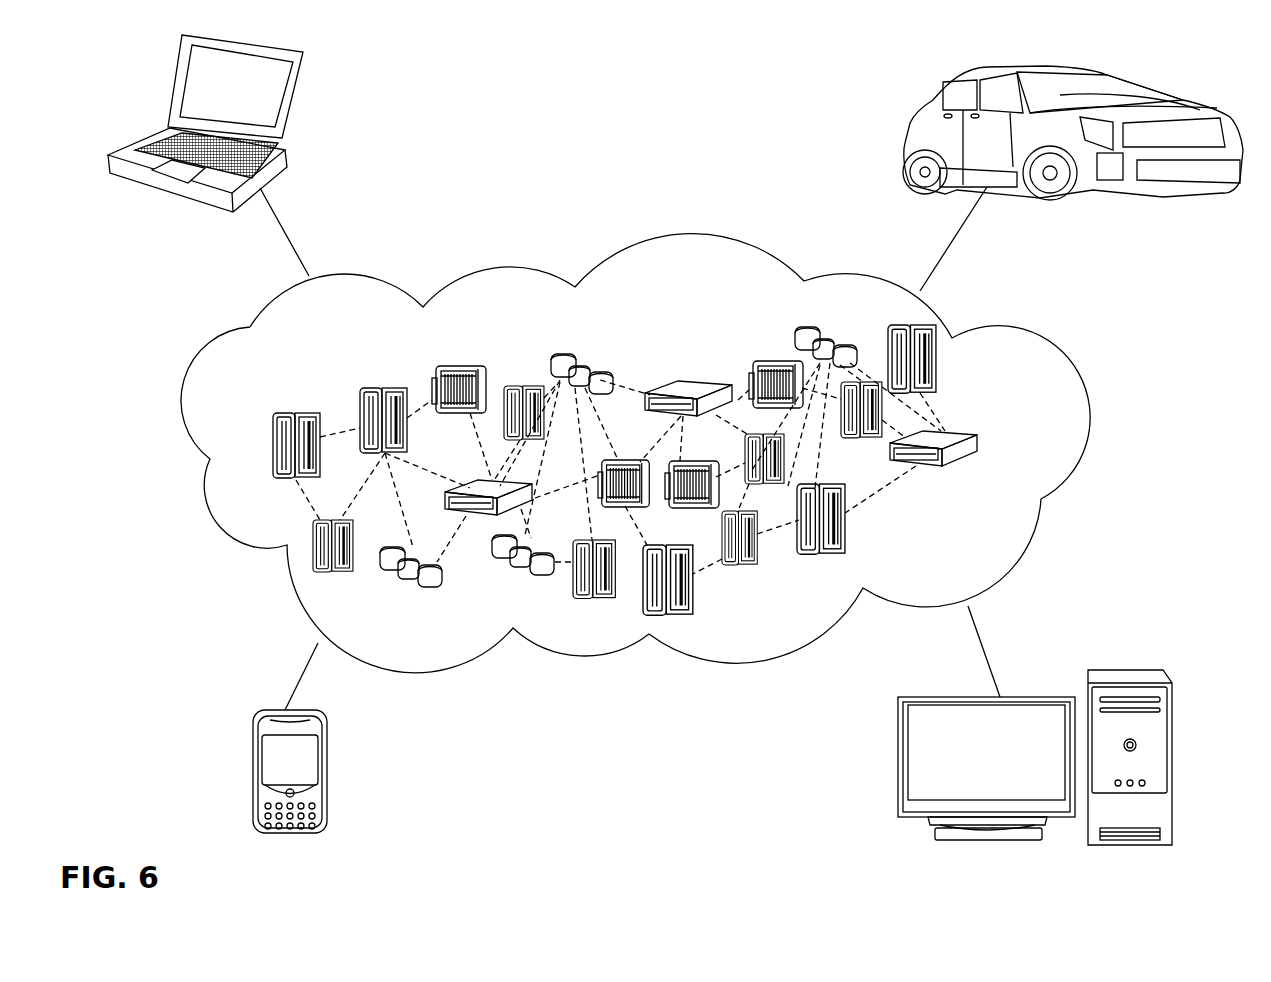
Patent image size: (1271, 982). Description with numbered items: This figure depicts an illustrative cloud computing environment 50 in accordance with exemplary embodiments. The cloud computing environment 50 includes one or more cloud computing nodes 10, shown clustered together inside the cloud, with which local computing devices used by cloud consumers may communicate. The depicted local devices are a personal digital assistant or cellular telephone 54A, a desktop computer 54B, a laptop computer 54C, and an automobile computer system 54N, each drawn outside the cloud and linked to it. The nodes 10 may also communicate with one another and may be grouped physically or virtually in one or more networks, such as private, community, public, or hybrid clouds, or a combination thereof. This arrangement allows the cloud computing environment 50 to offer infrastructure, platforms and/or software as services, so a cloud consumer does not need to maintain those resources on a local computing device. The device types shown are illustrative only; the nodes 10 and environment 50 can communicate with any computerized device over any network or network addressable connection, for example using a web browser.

The cloud computing environment 50 is at (1047, 352).
The cloud computing nodes 10 is at (713, 470).
The personal digital assistant or cellular telephone 54A is at (255, 777).
The desktop computer 54B is at (1133, 670).
The laptop computer 54C is at (297, 107).
The automobile computer system 54N is at (910, 115).